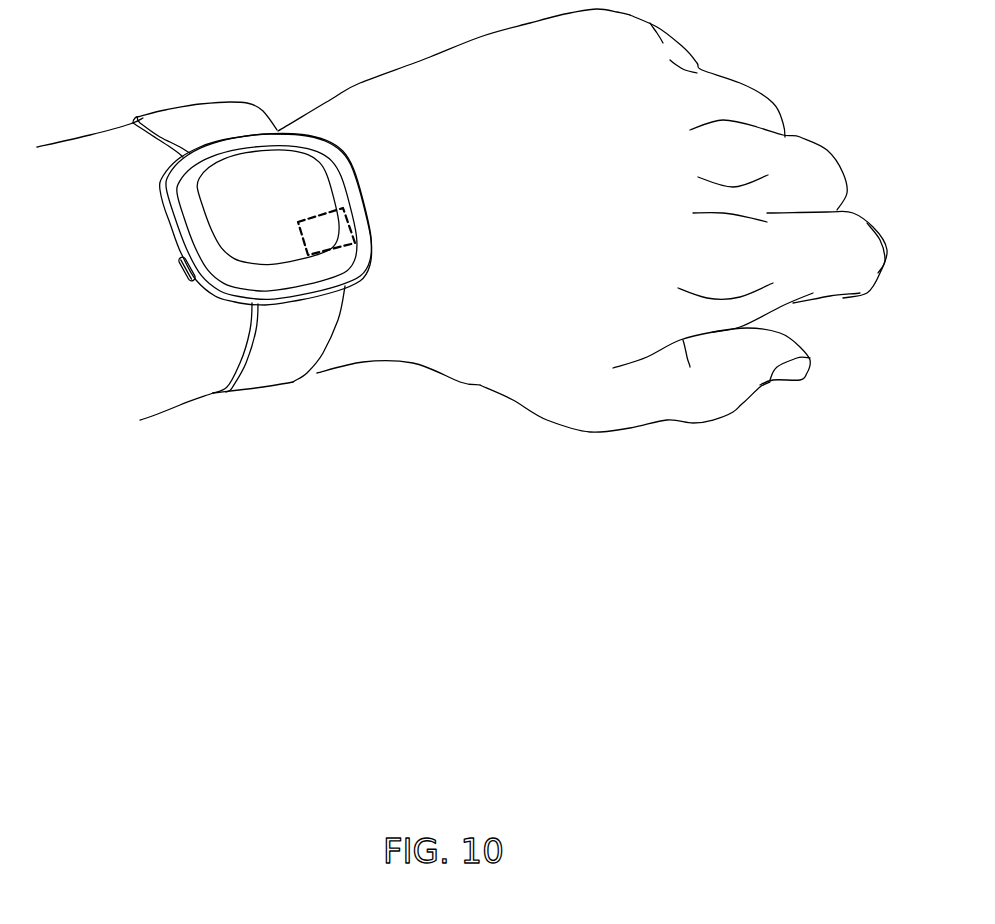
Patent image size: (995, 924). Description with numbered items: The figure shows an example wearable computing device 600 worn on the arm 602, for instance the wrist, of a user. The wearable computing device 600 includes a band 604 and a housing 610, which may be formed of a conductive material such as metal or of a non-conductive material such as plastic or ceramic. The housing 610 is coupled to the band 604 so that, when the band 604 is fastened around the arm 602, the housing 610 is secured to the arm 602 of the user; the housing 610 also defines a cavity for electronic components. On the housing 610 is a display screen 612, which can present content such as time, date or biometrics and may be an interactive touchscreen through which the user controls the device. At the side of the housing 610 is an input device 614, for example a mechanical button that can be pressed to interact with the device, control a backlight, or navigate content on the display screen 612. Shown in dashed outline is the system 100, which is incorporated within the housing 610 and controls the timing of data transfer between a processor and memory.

The system 100 is at (348, 218).
The wearable computing device 600 is at (280, 401).
The arm 602 is at (371, 341).
The band 604 is at (223, 112).
The housing 610 is at (214, 300).
The display screen 612 is at (300, 172).
The input device 614 is at (185, 271).